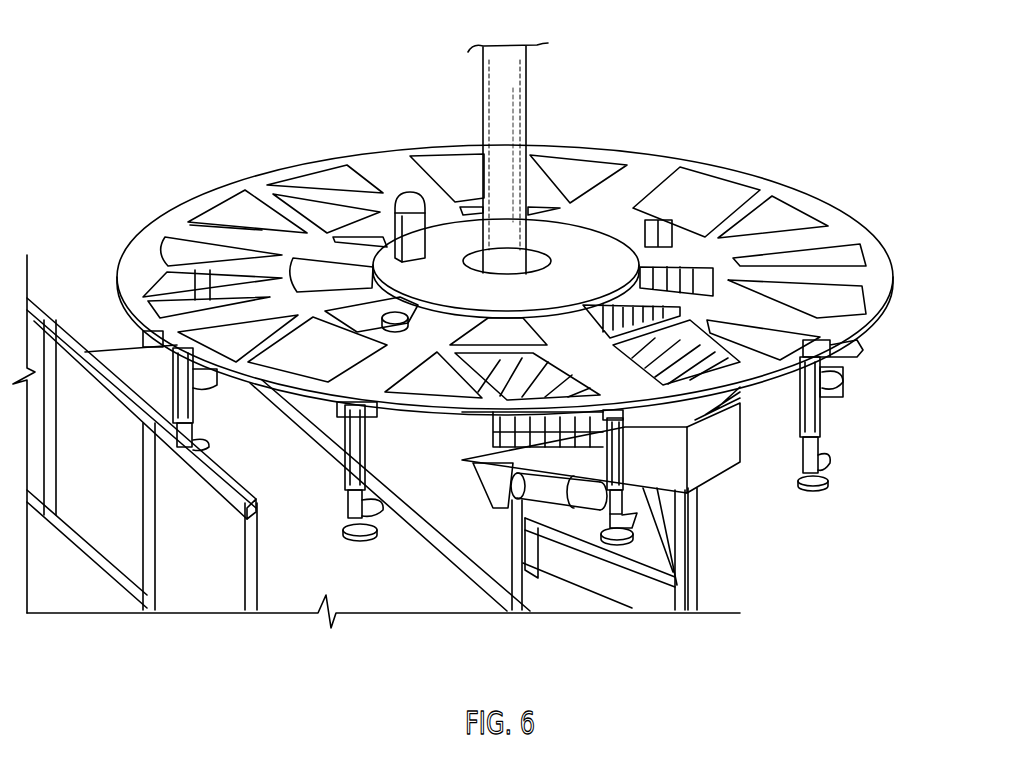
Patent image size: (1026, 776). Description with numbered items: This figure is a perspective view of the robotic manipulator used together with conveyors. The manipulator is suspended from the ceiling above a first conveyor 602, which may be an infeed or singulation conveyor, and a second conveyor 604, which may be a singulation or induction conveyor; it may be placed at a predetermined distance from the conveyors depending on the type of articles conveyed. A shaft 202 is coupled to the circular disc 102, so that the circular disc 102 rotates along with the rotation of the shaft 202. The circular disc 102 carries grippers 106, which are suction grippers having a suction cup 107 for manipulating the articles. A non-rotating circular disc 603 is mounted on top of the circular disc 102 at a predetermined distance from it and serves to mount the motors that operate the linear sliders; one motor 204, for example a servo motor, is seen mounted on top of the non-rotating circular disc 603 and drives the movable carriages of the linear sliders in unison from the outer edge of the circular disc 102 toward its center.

The circular disc 102 is at (713, 307).
The shaft 202 is at (512, 193).
The non-rotating circular disc 603 is at (573, 287).
The motor 204 is at (190, 225).
The gripper 106 is at (812, 413).
The suction cup 107 is at (815, 486).
The first conveyor 602 is at (685, 427).
The second conveyor 604 is at (297, 533).